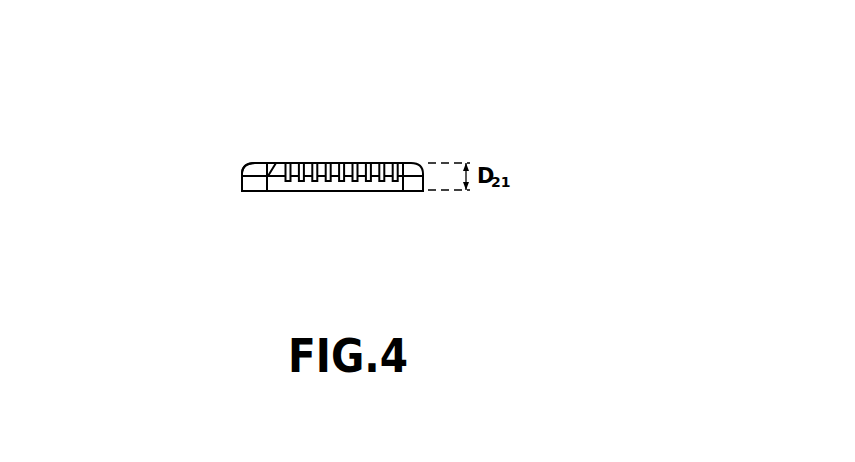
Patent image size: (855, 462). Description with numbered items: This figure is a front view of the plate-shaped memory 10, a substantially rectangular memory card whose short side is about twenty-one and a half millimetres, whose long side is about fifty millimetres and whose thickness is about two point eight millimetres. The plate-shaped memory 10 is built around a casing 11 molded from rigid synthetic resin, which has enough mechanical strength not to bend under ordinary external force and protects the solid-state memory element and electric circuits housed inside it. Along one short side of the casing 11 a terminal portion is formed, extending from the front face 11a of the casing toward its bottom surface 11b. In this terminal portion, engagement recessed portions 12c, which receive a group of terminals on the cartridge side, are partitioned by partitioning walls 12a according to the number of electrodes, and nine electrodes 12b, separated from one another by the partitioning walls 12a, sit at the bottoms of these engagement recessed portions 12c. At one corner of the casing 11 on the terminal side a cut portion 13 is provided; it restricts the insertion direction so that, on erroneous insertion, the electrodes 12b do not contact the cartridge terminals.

The plate-shaped memory 10 is at (408, 103).
The casing 11 is at (295, 192).
The front face 11a is at (408, 182).
The bottom surface 11b is at (265, 163).
The partitioning walls 12a is at (320, 163).
The electrodes 12b is at (337, 181).
The engagement recessed portions 12c is at (294, 163).
The cut portion 13 is at (250, 180).